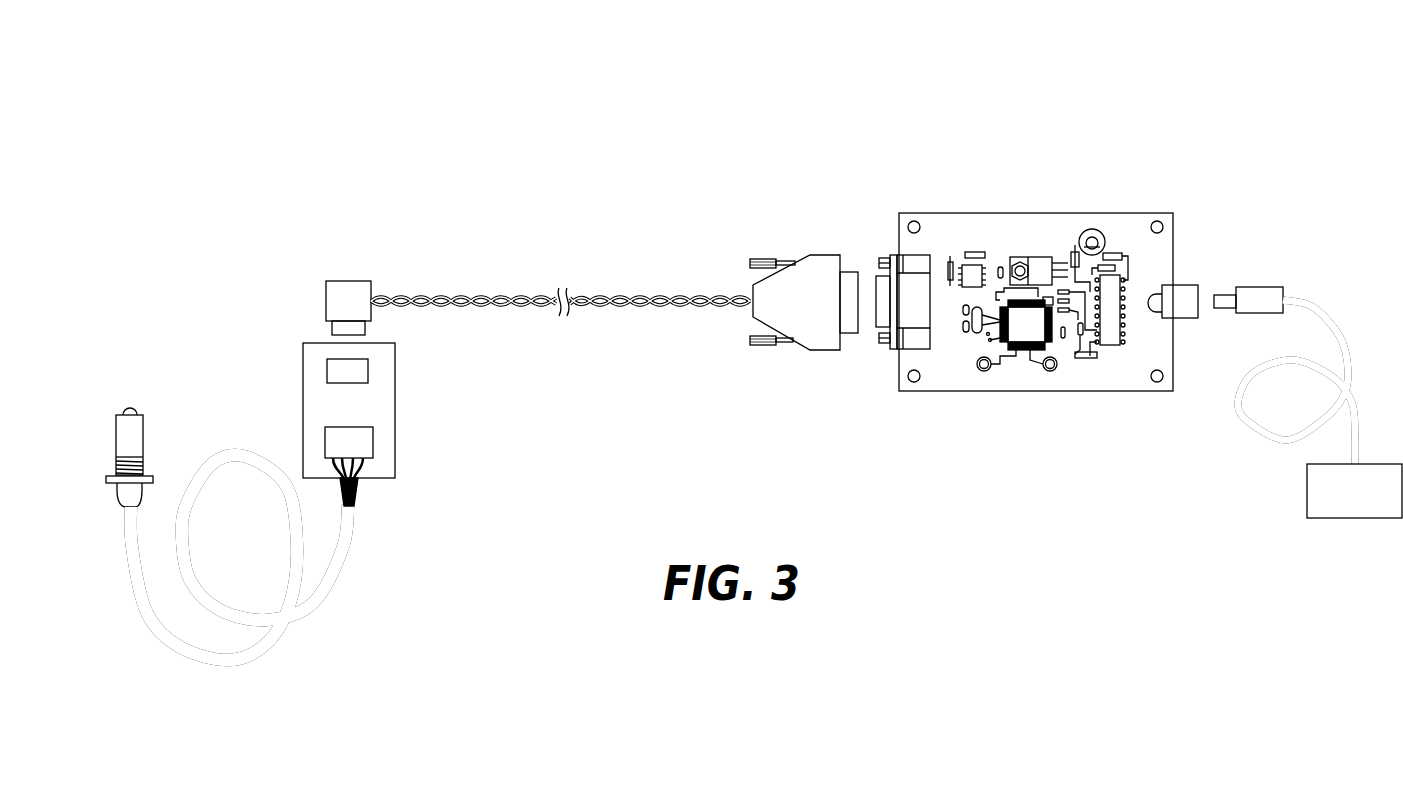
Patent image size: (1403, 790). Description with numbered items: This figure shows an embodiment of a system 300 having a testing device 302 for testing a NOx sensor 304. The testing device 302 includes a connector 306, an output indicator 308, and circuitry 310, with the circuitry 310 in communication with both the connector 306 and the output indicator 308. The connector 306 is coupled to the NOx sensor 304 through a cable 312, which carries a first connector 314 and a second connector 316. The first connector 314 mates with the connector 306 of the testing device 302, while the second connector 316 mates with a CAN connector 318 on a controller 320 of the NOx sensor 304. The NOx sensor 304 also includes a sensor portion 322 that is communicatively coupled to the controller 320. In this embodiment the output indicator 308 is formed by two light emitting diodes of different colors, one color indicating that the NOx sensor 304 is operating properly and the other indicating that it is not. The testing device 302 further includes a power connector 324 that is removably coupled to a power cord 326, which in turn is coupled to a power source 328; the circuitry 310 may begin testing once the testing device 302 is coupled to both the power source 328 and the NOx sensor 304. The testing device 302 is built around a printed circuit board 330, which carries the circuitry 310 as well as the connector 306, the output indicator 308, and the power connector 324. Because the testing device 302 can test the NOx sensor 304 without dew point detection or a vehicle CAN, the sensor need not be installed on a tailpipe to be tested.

The system 300 is at (519, 126).
The testing device 302 is at (1157, 199).
The NOx sensor 304 is at (286, 647).
The connector 306 is at (892, 348).
The output indicator 308 is at (983, 371).
The circuitry 310 is at (1127, 233).
The cable 312 is at (529, 287).
The first connector 314 is at (823, 262).
The second connector 316 is at (347, 282).
The CAN connector 318 is at (327, 363).
The controller 320 is at (317, 400).
The sensor portion 322 is at (130, 410).
The power connector 324 is at (1177, 318).
The power cord 326 is at (1261, 273).
The power source 328 is at (1360, 507).
The printed circuit board 330 is at (930, 220).